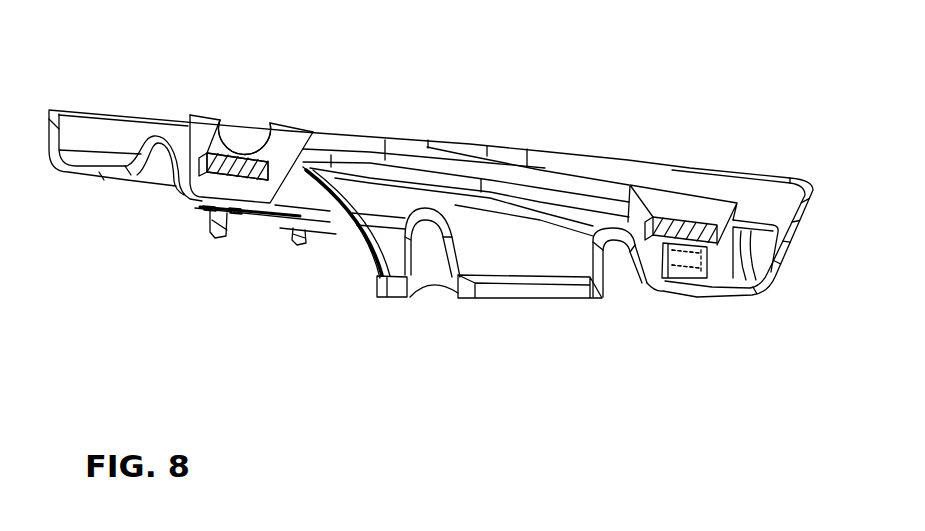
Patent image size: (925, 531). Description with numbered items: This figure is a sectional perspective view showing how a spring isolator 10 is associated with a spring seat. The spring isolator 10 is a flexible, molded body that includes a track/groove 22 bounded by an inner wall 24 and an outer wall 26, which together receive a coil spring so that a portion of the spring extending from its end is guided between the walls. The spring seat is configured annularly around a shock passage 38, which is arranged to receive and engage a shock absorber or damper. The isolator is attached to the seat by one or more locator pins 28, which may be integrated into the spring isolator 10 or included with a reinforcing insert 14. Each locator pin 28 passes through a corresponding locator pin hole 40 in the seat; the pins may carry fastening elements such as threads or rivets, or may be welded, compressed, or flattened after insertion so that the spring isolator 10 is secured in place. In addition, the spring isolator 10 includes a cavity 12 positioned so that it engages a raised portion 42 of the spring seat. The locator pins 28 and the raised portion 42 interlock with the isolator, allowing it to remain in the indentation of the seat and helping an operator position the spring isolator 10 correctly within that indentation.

The spring isolator 10 is at (647, 180).
The cavity 12 is at (677, 283).
The reinforcing insert 14 is at (194, 169).
The track/groove 22 is at (246, 130).
The inner wall 24 is at (267, 118).
The outer wall 26 is at (229, 115).
The locator pin 28 is at (224, 247).
The shock passage 38 is at (508, 304).
The locator pin hole 40 is at (234, 222).
The raised portion 42 is at (658, 280).